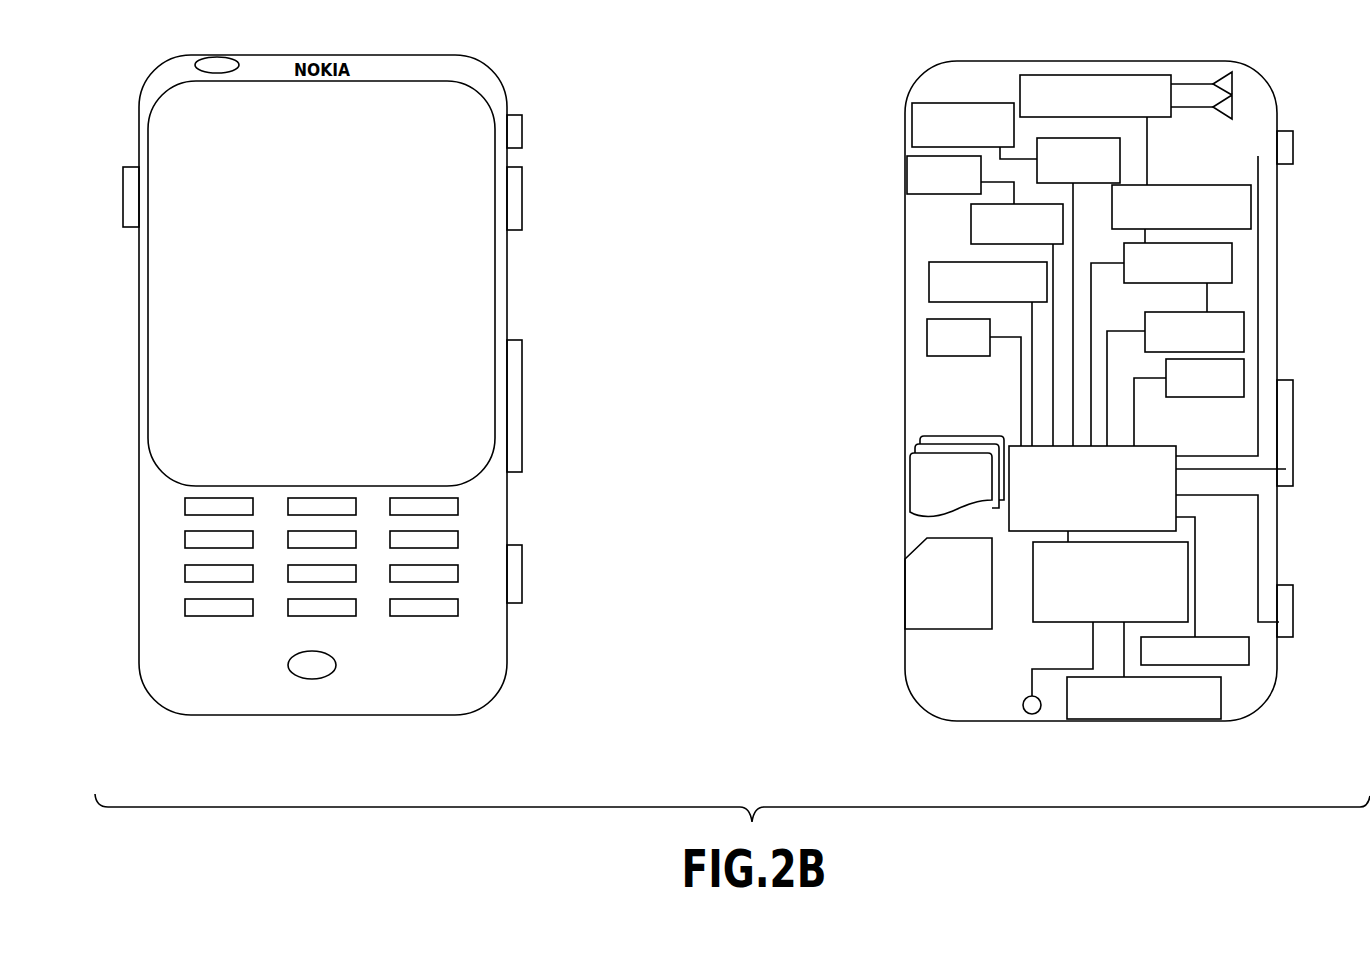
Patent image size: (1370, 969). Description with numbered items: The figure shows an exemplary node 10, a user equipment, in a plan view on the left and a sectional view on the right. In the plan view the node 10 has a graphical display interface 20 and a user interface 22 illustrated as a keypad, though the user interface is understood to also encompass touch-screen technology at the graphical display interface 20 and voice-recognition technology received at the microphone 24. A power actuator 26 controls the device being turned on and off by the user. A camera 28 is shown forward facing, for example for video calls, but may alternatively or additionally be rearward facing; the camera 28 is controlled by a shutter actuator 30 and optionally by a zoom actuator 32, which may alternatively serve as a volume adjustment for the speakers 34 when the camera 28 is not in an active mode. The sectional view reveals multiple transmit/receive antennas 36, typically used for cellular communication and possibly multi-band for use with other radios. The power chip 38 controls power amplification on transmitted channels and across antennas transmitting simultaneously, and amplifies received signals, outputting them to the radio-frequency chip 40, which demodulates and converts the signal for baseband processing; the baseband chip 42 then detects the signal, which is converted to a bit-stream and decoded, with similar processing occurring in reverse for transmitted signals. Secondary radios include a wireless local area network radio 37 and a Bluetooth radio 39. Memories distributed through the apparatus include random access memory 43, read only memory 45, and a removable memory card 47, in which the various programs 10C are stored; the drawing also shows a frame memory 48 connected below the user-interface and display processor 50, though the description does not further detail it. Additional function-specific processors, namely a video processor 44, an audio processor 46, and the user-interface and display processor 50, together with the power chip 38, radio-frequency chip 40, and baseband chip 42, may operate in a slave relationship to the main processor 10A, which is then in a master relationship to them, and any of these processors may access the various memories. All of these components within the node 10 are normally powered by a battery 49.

The node 10 is at (502, 760).
The main processor 10A is at (1020, 453).
The programs 10C is at (917, 490).
The graphical display interface 20 is at (173, 298).
The user interface 22 is at (172, 623).
The microphone 24 is at (317, 667).
The power actuator 26 is at (517, 128).
The camera 28 is at (222, 56).
The shutter actuator 30 is at (512, 566).
The zoom actuator 32 is at (512, 383).
The speaker 34 is at (132, 167).
The transmit/receive antennas 36 is at (1233, 76).
The WLAN radio 37 is at (933, 295).
The power chip 38 is at (1087, 81).
The Bluetooth radio 39 is at (933, 338).
The radio-frequency (RF) chip 40 is at (1240, 220).
The baseband (BB) chip 42 is at (1227, 269).
The random access memory (RAM) 43 is at (1235, 335).
The video processor 44 is at (1113, 175).
The read only memory (ROM) 45 is at (1239, 376).
The audio processor 46 is at (973, 230).
The memory card 47 is at (913, 561).
The frame memory 48 is at (1143, 714).
The battery 49 is at (1261, 669).
The UI/display processor 50 is at (1058, 610).